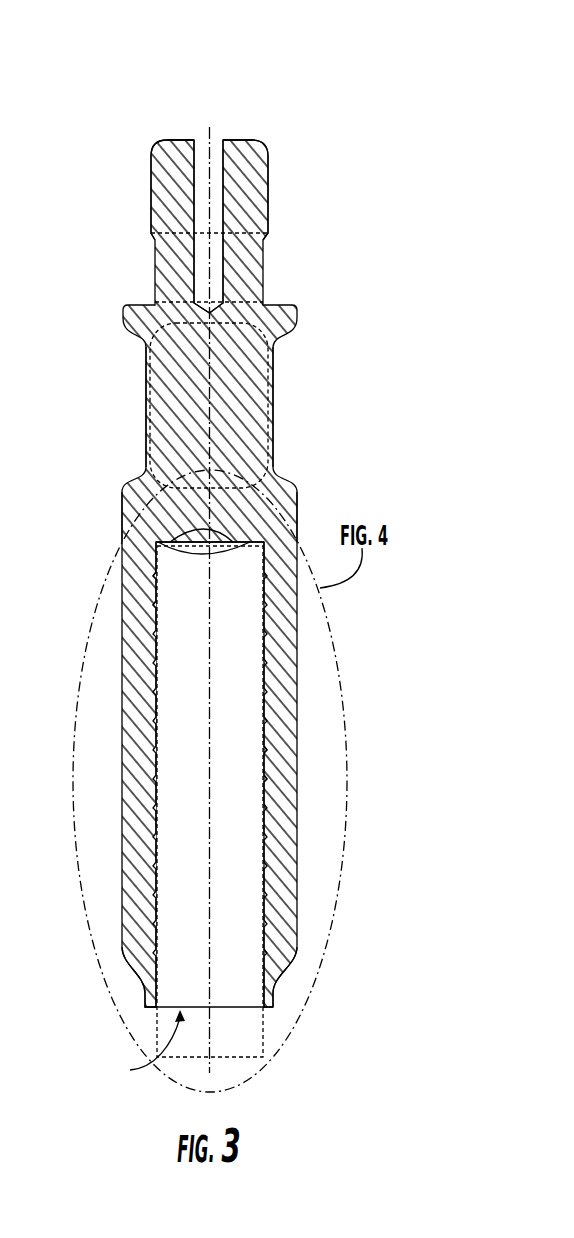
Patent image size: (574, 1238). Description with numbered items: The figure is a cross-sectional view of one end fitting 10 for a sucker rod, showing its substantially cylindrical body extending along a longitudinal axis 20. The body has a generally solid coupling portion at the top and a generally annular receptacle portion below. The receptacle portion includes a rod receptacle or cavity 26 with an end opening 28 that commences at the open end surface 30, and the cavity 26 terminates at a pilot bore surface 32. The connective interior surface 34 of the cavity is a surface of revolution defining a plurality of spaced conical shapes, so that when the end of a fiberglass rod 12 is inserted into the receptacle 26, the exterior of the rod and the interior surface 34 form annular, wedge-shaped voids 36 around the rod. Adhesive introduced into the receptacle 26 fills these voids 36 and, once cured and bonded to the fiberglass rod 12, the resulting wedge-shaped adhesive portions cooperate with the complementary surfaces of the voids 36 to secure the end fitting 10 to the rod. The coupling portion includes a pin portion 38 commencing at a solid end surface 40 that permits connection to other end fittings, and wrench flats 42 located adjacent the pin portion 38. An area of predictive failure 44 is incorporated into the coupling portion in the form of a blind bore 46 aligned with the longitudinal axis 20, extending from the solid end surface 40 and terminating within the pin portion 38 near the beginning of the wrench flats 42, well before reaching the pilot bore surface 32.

The end fitting 10 is at (296, 120).
The fiberglass rod 12 is at (242, 1058).
The longitudinal axis 20 is at (210, 990).
The rod receptacle or cavity 26 is at (145, 1049).
The end opening 28 is at (160, 1008).
The open end surface 30 is at (273, 1007).
The pilot bore surface 32 is at (155, 542).
The connective interior surface 34 is at (153, 938).
The annular wedge-shaped voids 36 is at (152, 582).
The pin portion 38 is at (150, 175).
The solid end surface 40 is at (179, 140).
The wrench flats 42 is at (275, 400).
The area of predictive failure 44 is at (237, 233).
The blind bore 46 is at (217, 147).